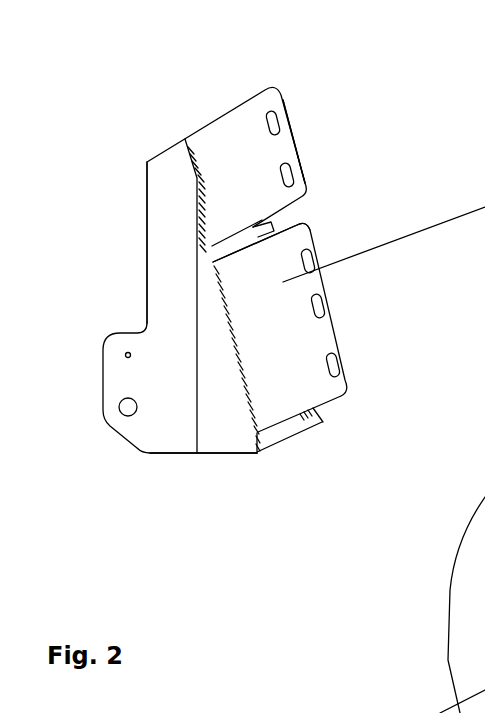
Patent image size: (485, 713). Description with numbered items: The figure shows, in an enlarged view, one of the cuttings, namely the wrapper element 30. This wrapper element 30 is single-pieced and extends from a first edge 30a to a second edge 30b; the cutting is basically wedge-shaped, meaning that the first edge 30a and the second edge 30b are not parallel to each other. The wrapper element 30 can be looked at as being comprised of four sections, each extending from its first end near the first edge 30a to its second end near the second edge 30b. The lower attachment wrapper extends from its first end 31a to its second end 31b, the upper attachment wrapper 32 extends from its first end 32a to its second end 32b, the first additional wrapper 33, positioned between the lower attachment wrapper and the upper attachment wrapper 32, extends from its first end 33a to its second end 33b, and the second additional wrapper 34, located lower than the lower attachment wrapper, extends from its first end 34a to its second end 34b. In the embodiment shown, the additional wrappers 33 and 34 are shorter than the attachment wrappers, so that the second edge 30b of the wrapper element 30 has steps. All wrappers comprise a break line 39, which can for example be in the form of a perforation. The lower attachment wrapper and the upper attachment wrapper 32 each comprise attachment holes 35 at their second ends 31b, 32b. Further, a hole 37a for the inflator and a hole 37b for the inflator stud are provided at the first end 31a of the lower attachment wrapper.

The wrapper element 30 is at (137, 117).
The first edge 30a is at (146, 220).
The second edge 30b is at (293, 130).
The first end of lower attachment wrapper 31a is at (125, 380).
The second end of lower attachment wrapper 31b is at (327, 333).
The upper attachment wrapper 32 is at (250, 150).
The first end of upper attachment wrapper 32a is at (155, 205).
The second end of upper attachment wrapper 32b is at (289, 128).
The first additional wrapper 33 is at (234, 237).
The first end of first additional wrapper 33a is at (153, 288).
The second end of first additional wrapper 33b is at (271, 222).
The second additional wrapper 34 is at (297, 435).
The first end of second additional wrapper 34a is at (250, 453).
The second end of second additional wrapper 34b is at (322, 418).
The attachment holes 35 is at (272, 113).
The hole for the inflator 37a is at (128, 407).
The hole for the inflator stud 37b is at (126, 355).
The break line 39 is at (258, 222).